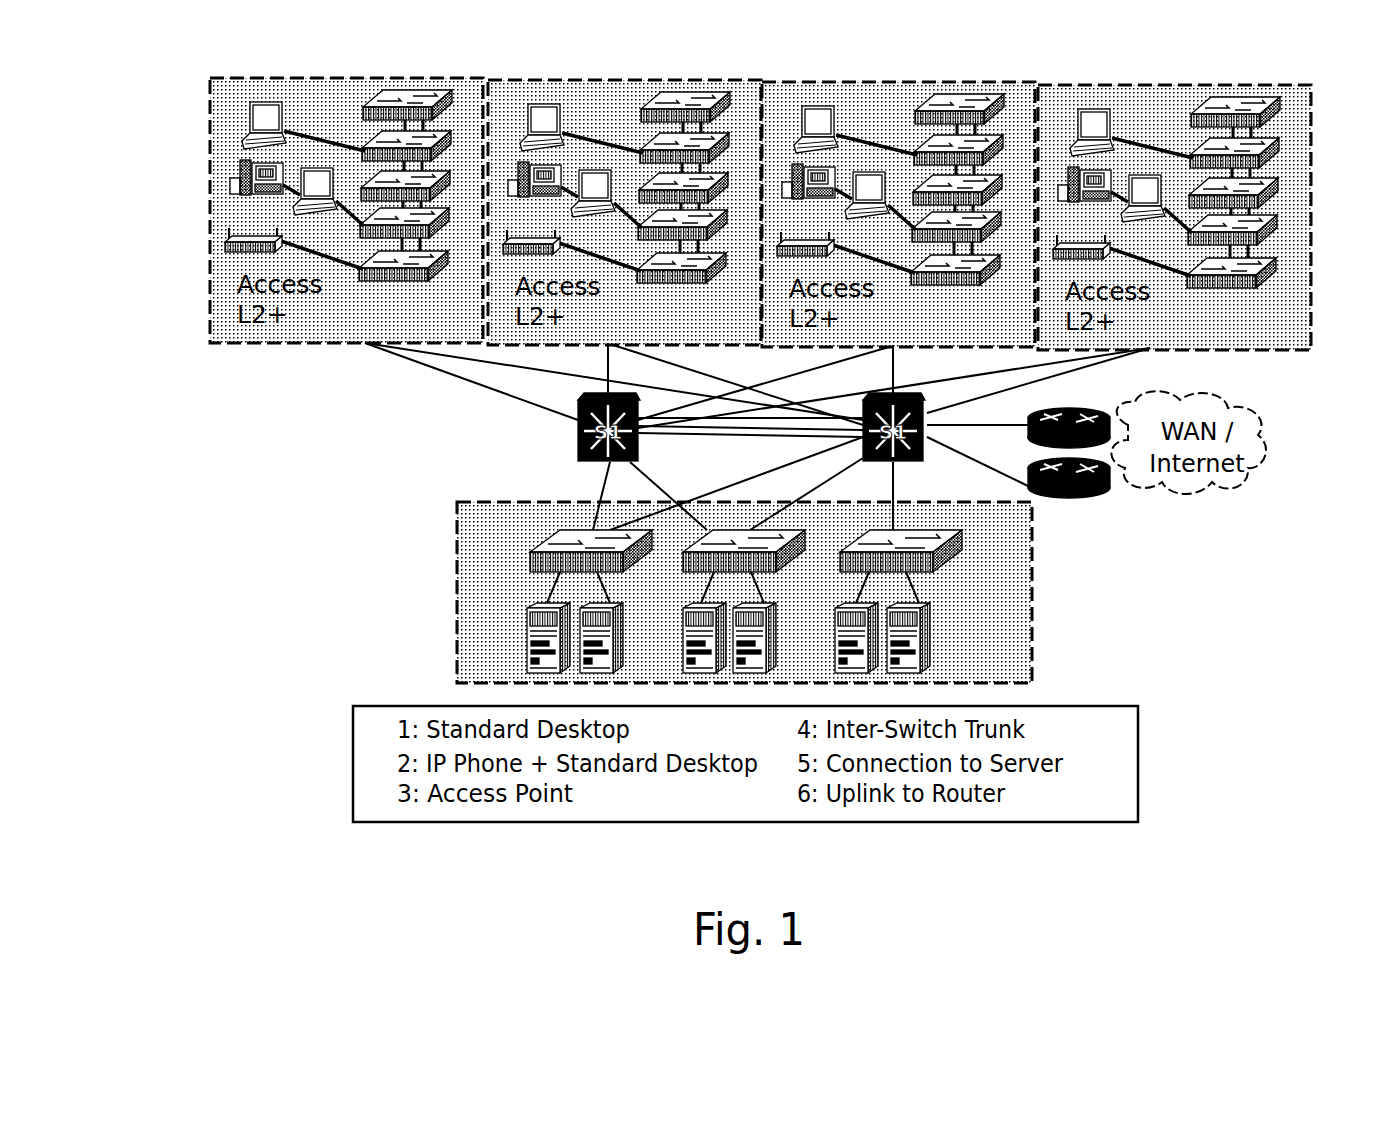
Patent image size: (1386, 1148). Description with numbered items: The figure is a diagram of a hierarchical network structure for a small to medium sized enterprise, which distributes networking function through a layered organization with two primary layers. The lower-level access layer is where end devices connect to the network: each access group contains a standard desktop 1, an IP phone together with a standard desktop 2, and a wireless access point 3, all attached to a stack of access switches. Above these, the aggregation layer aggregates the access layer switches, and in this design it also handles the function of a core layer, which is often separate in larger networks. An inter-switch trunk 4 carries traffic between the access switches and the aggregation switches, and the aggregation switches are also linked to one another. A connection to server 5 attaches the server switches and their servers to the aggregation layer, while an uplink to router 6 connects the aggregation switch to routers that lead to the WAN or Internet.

The standard desktop 1 is at (247, 117).
The IP phone + standard desktop 2 is at (233, 180).
The access point 3 is at (227, 243).
The inter-switch trunk 4 is at (487, 390).
The connection to server 5 is at (360, 532).
The uplink to router 6 is at (1148, 540).